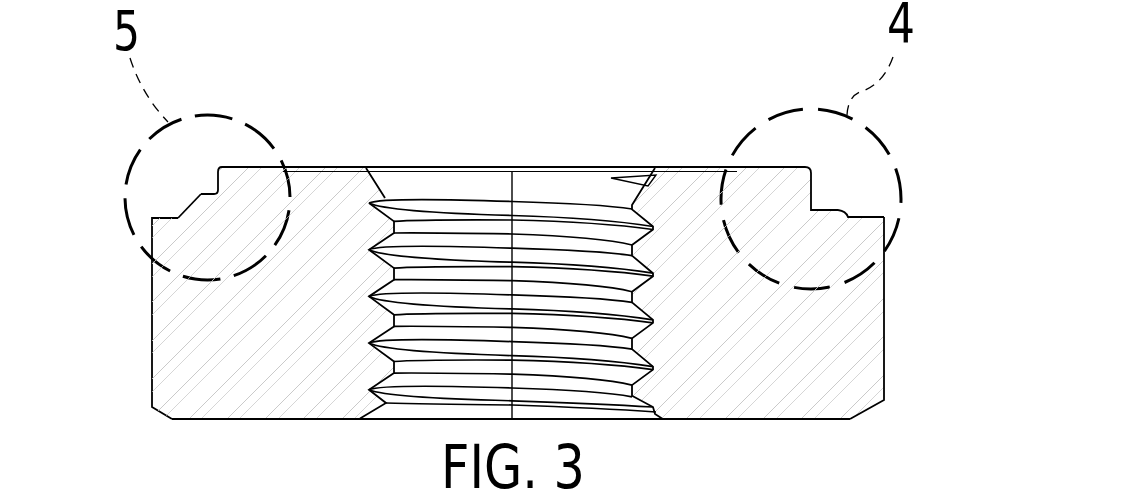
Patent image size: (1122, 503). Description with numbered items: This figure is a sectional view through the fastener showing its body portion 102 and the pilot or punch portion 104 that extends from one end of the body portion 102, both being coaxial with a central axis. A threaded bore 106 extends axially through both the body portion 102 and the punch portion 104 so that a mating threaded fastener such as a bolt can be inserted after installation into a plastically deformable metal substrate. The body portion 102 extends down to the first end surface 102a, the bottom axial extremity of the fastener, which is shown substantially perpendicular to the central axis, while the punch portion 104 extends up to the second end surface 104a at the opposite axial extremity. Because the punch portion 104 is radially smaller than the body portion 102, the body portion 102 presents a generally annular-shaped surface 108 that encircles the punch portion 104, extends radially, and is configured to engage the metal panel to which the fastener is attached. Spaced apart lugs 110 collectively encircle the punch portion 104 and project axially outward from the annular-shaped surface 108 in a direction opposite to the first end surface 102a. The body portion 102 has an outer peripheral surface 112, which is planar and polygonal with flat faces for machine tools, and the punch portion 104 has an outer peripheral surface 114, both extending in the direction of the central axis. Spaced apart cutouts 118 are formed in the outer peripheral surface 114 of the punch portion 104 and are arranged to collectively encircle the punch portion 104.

The body portion 102 is at (910, 222).
The first end surface 102a is at (257, 420).
The punch portion 104 is at (910, 157).
The second end surface 104a is at (238, 167).
The threaded bore 106 is at (392, 366).
The annular-shaped surface 108 is at (863, 212).
The lugs 110 is at (197, 191).
The outer peripheral surface of the body portion 112 is at (886, 378).
The outer peripheral surface of the punch portion 114 is at (827, 174).
The cutouts 118 is at (208, 191).